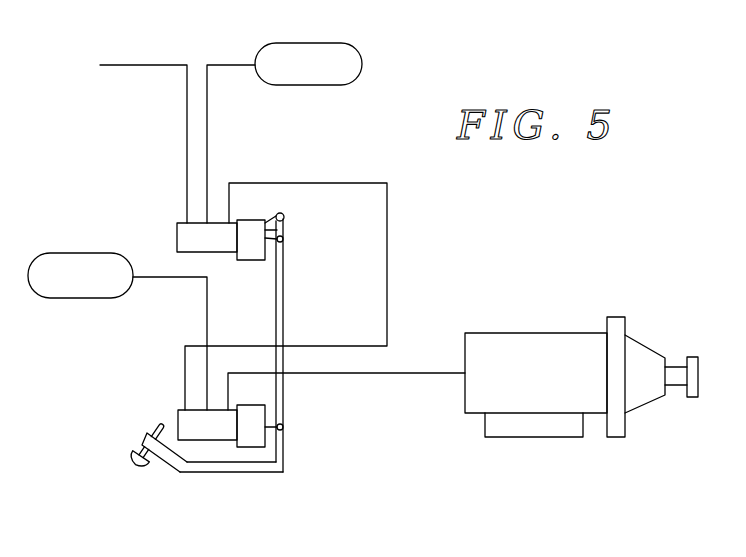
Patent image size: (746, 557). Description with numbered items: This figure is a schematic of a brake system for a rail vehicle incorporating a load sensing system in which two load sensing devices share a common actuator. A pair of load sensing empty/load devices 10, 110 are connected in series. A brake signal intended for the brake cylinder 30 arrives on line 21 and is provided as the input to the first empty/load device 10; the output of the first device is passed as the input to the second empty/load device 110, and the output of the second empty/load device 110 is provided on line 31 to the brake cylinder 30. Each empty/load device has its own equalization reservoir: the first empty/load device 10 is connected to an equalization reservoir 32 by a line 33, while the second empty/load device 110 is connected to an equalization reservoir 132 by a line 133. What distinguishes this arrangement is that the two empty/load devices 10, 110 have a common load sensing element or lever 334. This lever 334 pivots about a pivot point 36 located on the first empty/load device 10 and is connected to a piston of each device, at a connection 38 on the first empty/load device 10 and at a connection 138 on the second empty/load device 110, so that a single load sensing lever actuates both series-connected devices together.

The empty/load device 10 is at (167, 223).
The line 21 is at (187, 128).
The brake cylinder 30 is at (532, 358).
The line 31 is at (398, 375).
The equalization reservoir 32 is at (328, 57).
The line 33 is at (207, 152).
The pivot point 36 is at (284, 213).
The piston connection 38 is at (284, 241).
The empty/load device 110 is at (167, 493).
The equalization reservoir 132 is at (80, 265).
The line 133 is at (163, 278).
The piston connection 138 is at (284, 428).
The common load sensing lever 334 is at (240, 473).